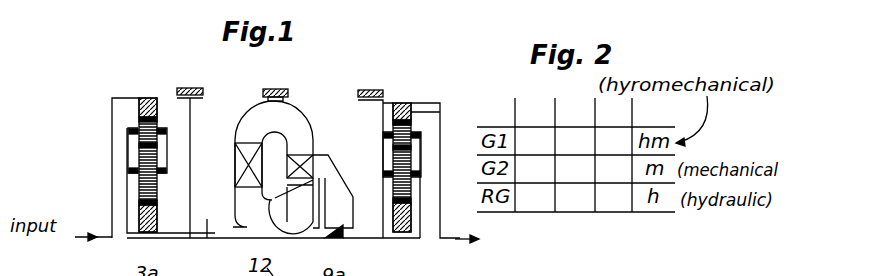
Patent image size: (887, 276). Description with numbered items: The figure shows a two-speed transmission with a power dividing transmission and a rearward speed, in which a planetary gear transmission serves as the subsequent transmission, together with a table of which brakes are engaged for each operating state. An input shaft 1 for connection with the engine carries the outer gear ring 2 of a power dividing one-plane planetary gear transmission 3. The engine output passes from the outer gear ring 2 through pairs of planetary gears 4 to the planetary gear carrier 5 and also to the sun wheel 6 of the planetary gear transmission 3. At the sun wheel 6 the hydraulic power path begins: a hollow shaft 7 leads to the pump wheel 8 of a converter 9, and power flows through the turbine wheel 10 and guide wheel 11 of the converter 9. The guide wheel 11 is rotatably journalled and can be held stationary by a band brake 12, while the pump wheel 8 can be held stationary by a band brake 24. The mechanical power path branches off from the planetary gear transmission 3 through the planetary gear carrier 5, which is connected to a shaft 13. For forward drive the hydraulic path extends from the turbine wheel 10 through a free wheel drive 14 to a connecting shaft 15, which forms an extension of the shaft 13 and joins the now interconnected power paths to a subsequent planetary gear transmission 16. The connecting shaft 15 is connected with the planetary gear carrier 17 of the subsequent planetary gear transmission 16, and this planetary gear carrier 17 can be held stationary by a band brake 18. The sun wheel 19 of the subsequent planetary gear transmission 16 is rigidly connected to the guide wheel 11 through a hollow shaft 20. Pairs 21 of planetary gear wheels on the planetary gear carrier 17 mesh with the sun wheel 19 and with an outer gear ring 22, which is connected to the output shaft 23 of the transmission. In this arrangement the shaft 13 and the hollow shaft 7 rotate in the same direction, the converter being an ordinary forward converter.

In FIG. 1, the input shaft 1 is at (112, 163).
In FIG. 1, the outer gear ring 2 is at (138, 98).
In FIG. 1, the power dividing one-plane planetary gear transmission 3 is at (147, 92).
In FIG. 1, the pairs of planetary gears 4 is at (160, 127).
In FIG. 1, the planetary gear carrier 5 is at (126, 230).
In FIG. 1, the sun wheel 6 is at (157, 218).
In FIG. 1, the hollow shaft 7 is at (208, 217).
In FIG. 1, the pump wheel 8 is at (303, 210).
In FIG. 1, the converter 9 is at (300, 96).
In FIG. 1, the turbine wheel 10 is at (314, 154).
In FIG. 1, the guide wheel 11 is at (243, 165).
In FIG. 1, the band brake 12 is at (268, 89).
In FIG. 2, the band brake 12 is at (539, 140).
In FIG. 1, the shaft 13 is at (183, 239).
In FIG. 1, the free wheel drive 14 is at (345, 239).
In FIG. 1, the connecting shaft 15 is at (390, 239).
In FIG. 1, the subsequent planetary gear transmission 16 is at (407, 95).
In FIG. 1, the planetary gear carrier 17 is at (421, 215).
In FIG. 1, the band brake 18 is at (367, 89).
In FIG. 2, the band brake 18 is at (577, 154).
In FIG. 1, the sun wheel 19 is at (394, 218).
In FIG. 1, the hollow shaft 20 is at (345, 161).
In FIG. 1, the pairs of planetary gear wheels 21 is at (387, 182).
In FIG. 1, the outer gear ring 22 is at (440, 112).
In FIG. 1, the output shaft 23 is at (450, 240).
In FIG. 1, the band brake 24 is at (191, 88).
In FIG. 2, the band brake 24 is at (615, 140).